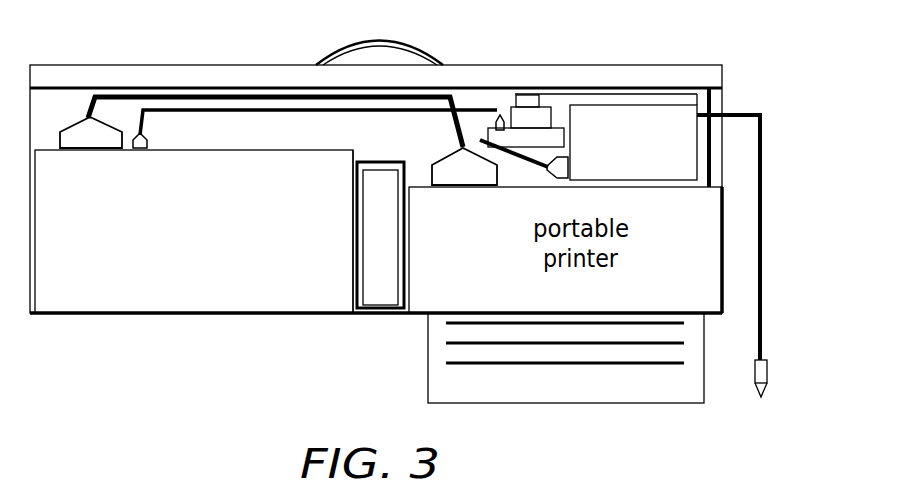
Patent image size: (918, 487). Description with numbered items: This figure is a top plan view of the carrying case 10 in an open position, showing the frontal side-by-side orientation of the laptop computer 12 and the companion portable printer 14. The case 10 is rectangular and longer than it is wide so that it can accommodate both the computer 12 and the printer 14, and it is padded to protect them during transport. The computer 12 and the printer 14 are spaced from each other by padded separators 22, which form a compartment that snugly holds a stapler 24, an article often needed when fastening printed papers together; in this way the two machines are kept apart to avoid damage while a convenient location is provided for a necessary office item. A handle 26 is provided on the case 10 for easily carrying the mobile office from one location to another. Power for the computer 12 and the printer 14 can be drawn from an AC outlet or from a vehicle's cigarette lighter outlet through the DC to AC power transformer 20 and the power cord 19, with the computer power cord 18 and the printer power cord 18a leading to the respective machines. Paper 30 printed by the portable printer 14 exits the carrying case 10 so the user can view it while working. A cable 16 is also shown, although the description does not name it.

The carrying case 10 is at (779, 130).
The laptop computer 12 is at (181, 277).
The portable printer 14 is at (705, 270).
The printer cable 16 is at (189, 96).
The computer power cord 18 is at (478, 108).
The printer power cord 18a is at (623, 88).
The power cord 19 is at (538, 155).
The DC to AC power transformer 20 is at (689, 117).
The padded separators 22 is at (355, 267).
The stapler 24 is at (386, 290).
The handle 26 is at (398, 40).
The paper 30 is at (627, 380).